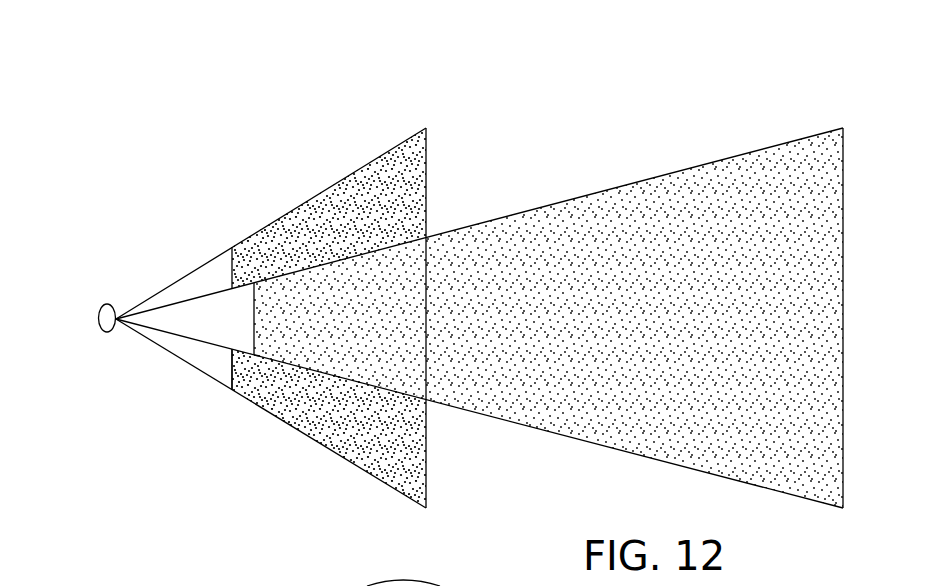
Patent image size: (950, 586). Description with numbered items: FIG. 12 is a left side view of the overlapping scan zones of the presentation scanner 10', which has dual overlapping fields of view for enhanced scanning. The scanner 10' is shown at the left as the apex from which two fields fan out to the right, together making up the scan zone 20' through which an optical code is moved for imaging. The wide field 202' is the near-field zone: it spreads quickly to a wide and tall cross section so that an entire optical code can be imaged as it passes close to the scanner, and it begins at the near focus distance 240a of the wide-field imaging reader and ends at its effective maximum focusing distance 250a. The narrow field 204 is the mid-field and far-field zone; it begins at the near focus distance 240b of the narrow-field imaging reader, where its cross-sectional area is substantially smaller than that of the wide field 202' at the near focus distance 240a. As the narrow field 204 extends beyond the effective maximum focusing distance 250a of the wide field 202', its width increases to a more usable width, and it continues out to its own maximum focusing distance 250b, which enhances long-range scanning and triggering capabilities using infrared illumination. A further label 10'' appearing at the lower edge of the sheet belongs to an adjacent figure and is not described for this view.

The presentation scanner 10' is at (89, 355).
The scan zone 20' is at (479, 260).
The wide field 202' is at (329, 318).
The narrow field 204 is at (722, 185).
The near focus distance 240a is at (232, 397).
The near focus distance 240b is at (255, 365).
The effective maximum focusing distance 250a is at (426, 508).
The maximum focusing distance 250b is at (843, 508).
The light source (adjacent figure) 10'' is at (304, 567).